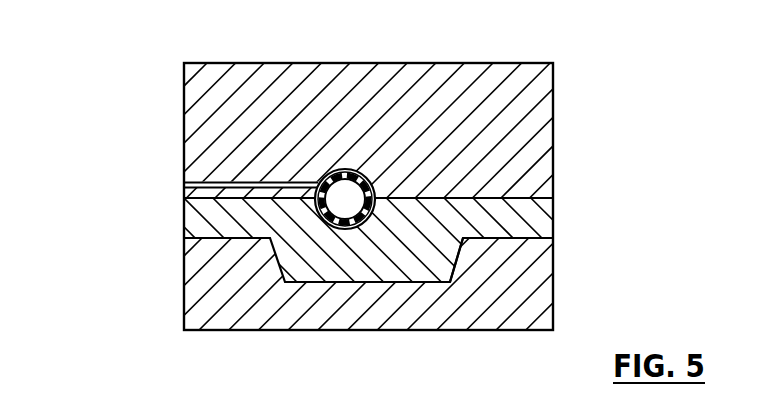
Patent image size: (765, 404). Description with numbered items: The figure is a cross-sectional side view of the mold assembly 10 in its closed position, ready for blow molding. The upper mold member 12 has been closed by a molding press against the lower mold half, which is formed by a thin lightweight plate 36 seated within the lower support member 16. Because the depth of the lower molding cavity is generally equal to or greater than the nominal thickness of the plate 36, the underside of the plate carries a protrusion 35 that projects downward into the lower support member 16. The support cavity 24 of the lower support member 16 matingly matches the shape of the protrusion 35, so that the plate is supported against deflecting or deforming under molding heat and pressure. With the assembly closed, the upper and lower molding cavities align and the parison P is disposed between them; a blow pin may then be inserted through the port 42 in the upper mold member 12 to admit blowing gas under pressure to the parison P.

The mold assembly 10 is at (110, 256).
The upper mold member 12 is at (547, 113).
The lower support member 16 is at (547, 290).
The plate 36 is at (547, 222).
The port 42 is at (184, 174).
The protrusion 35 is at (313, 267).
The support cavity 24 is at (452, 262).
The parison P is at (353, 172).